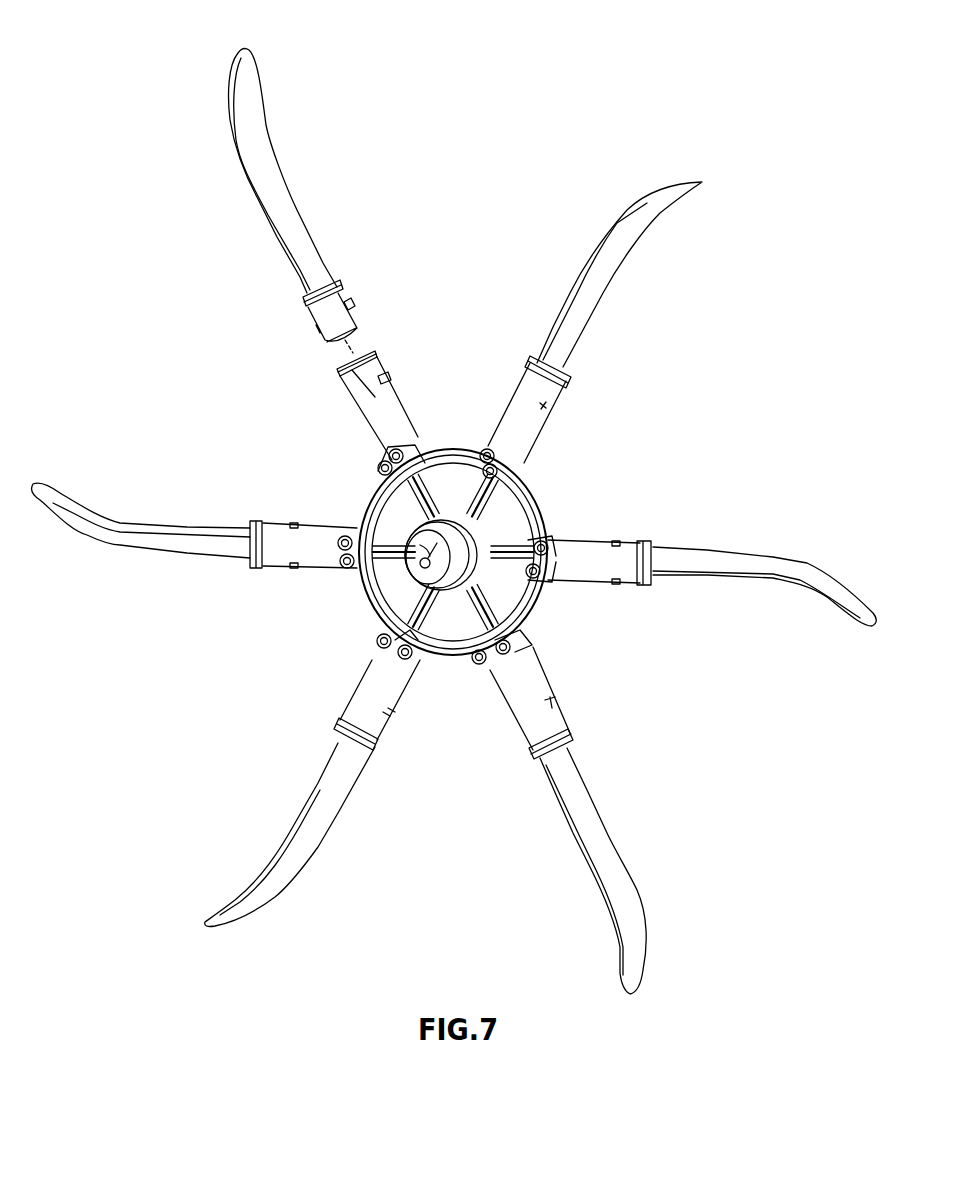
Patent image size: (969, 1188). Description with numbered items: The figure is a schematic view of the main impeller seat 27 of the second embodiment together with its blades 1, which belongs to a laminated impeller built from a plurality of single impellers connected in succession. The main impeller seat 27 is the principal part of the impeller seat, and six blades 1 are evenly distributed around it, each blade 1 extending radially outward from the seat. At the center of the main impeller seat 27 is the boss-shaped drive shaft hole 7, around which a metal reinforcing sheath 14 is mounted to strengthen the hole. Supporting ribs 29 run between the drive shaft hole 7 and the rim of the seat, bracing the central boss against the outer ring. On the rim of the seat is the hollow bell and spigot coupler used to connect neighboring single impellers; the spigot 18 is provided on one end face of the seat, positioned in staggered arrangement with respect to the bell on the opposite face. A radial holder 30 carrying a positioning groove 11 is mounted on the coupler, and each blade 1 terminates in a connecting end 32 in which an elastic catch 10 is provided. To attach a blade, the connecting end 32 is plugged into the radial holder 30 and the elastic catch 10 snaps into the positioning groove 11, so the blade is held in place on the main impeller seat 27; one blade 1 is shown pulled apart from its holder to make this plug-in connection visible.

The blade 1 is at (270, 167).
The drive shaft hole 7 is at (420, 551).
The elastic catch 10 is at (350, 322).
The positioning groove 11 is at (385, 371).
The metal reinforcing sheath 14 is at (417, 597).
The spigot 18 is at (505, 465).
The main impeller seat 27 is at (693, 477).
The supporting rib 29 is at (497, 605).
The radial holder 30 is at (408, 437).
The connecting end 32 is at (332, 325).